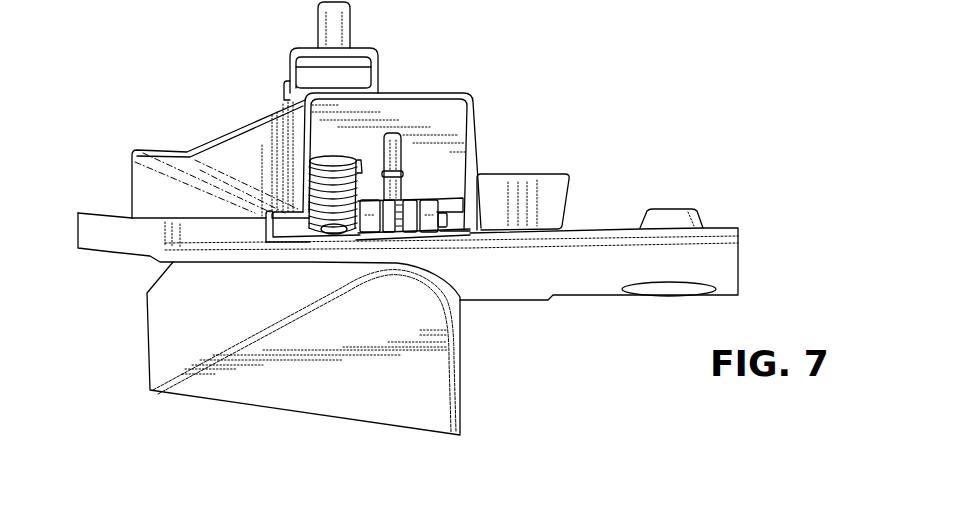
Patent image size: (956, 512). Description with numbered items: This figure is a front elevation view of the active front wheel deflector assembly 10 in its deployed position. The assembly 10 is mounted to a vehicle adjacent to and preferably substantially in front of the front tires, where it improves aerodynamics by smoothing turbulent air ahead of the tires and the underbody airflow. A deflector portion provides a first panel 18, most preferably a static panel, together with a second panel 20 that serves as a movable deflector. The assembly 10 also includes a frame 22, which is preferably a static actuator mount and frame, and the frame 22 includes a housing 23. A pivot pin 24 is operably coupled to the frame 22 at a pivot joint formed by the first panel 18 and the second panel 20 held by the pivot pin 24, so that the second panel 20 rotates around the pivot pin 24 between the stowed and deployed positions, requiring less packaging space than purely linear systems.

The active front wheel deflector assembly 10 is at (597, 84).
The first panel 18 is at (574, 297).
The second panel 20 is at (450, 395).
The frame 22 is at (178, 128).
The housing 23 is at (447, 92).
The pivot pin 24 is at (466, 208).